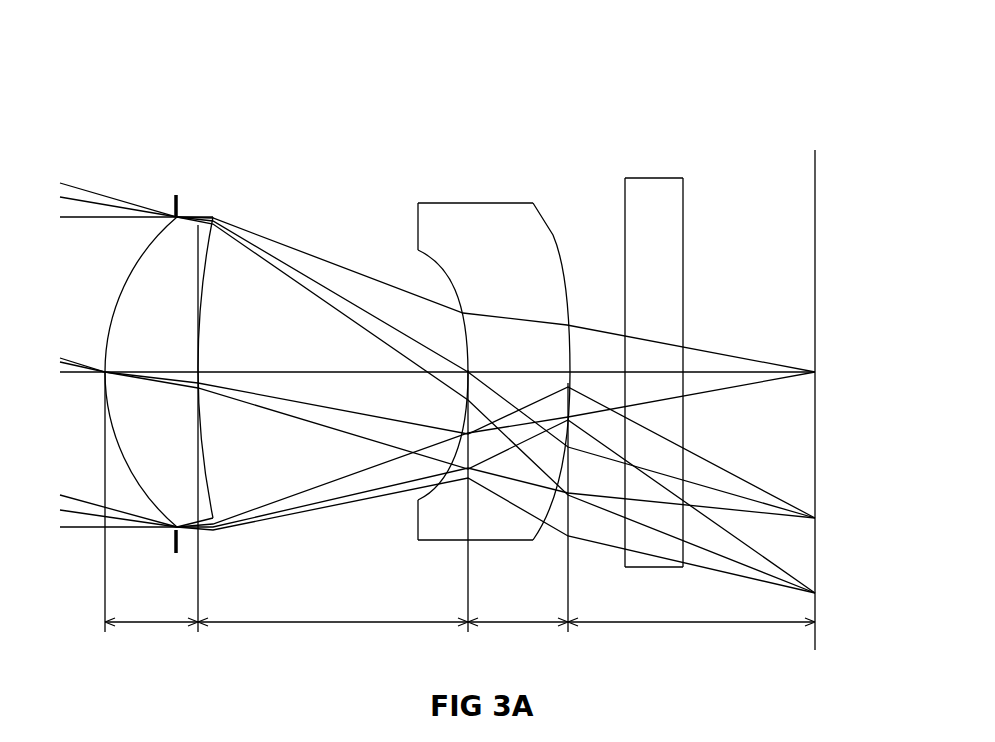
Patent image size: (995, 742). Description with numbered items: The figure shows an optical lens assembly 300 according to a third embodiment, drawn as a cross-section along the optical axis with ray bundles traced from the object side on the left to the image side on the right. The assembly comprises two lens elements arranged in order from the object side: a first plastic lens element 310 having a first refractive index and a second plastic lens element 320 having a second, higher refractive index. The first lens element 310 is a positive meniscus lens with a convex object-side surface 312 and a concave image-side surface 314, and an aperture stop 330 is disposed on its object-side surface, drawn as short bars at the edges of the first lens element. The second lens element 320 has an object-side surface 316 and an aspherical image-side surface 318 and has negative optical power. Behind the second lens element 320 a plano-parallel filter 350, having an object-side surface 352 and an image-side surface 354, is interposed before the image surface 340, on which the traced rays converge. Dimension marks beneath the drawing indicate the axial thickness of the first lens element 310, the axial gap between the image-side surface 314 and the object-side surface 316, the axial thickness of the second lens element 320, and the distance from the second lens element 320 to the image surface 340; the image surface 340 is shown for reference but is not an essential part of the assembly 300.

The optical lens assembly 300 is at (802, 78).
The first plastic lens element 310 is at (206, 255).
The convex object-side surface 312 is at (157, 237).
The concave image-side surface 314 is at (211, 263).
The object-side surface 316 is at (438, 262).
The aspherical image-side surface 318 is at (552, 232).
The second plastic lens element 320 is at (474, 222).
The aperture stop 330 is at (177, 193).
The image surface 340 is at (812, 262).
The plano-parallel filter 350 is at (655, 208).
The object-side surface 352 is at (623, 268).
The image-side surface 354 is at (686, 247).